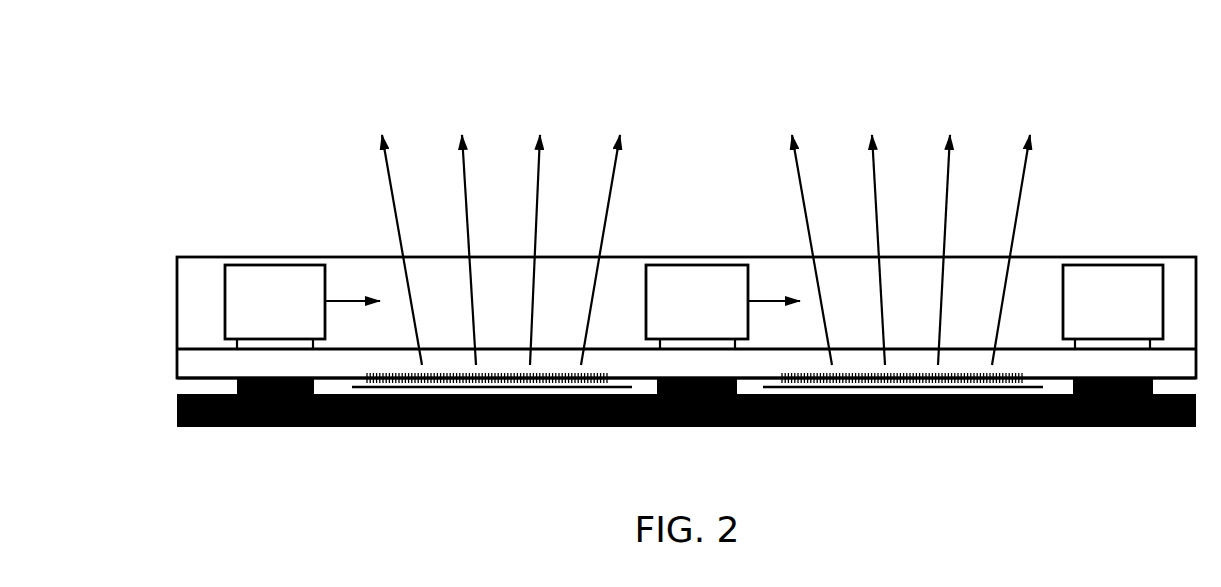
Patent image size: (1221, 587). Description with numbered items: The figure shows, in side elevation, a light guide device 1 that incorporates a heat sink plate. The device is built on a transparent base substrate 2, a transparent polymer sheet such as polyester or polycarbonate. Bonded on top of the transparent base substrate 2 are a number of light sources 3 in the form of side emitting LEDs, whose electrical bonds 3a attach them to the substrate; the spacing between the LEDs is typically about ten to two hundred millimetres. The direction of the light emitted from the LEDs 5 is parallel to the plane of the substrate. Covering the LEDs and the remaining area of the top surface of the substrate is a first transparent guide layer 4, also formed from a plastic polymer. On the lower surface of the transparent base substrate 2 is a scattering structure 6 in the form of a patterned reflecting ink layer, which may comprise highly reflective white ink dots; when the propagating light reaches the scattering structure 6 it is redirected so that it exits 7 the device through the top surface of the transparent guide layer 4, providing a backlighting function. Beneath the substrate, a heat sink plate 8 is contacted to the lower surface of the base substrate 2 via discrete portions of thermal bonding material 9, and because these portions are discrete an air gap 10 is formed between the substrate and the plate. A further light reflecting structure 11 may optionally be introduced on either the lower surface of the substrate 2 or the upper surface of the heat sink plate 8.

The light guide device 1 is at (112, 473).
The transparent base substrate 2 is at (197, 365).
The light sources 3 is at (275, 300).
The electrical bonds 3a is at (237, 337).
The first transparent guide layer 4 is at (1032, 275).
The direction of light emitted from the LEDs 5 is at (360, 300).
The scattering structure 6 is at (515, 380).
The exit of light 7 is at (367, 120).
The heat sink plate 8 is at (883, 425).
The thermal bonding material 9 is at (693, 387).
The air gap 10 is at (337, 387).
The further light reflecting structure 11 is at (443, 385).